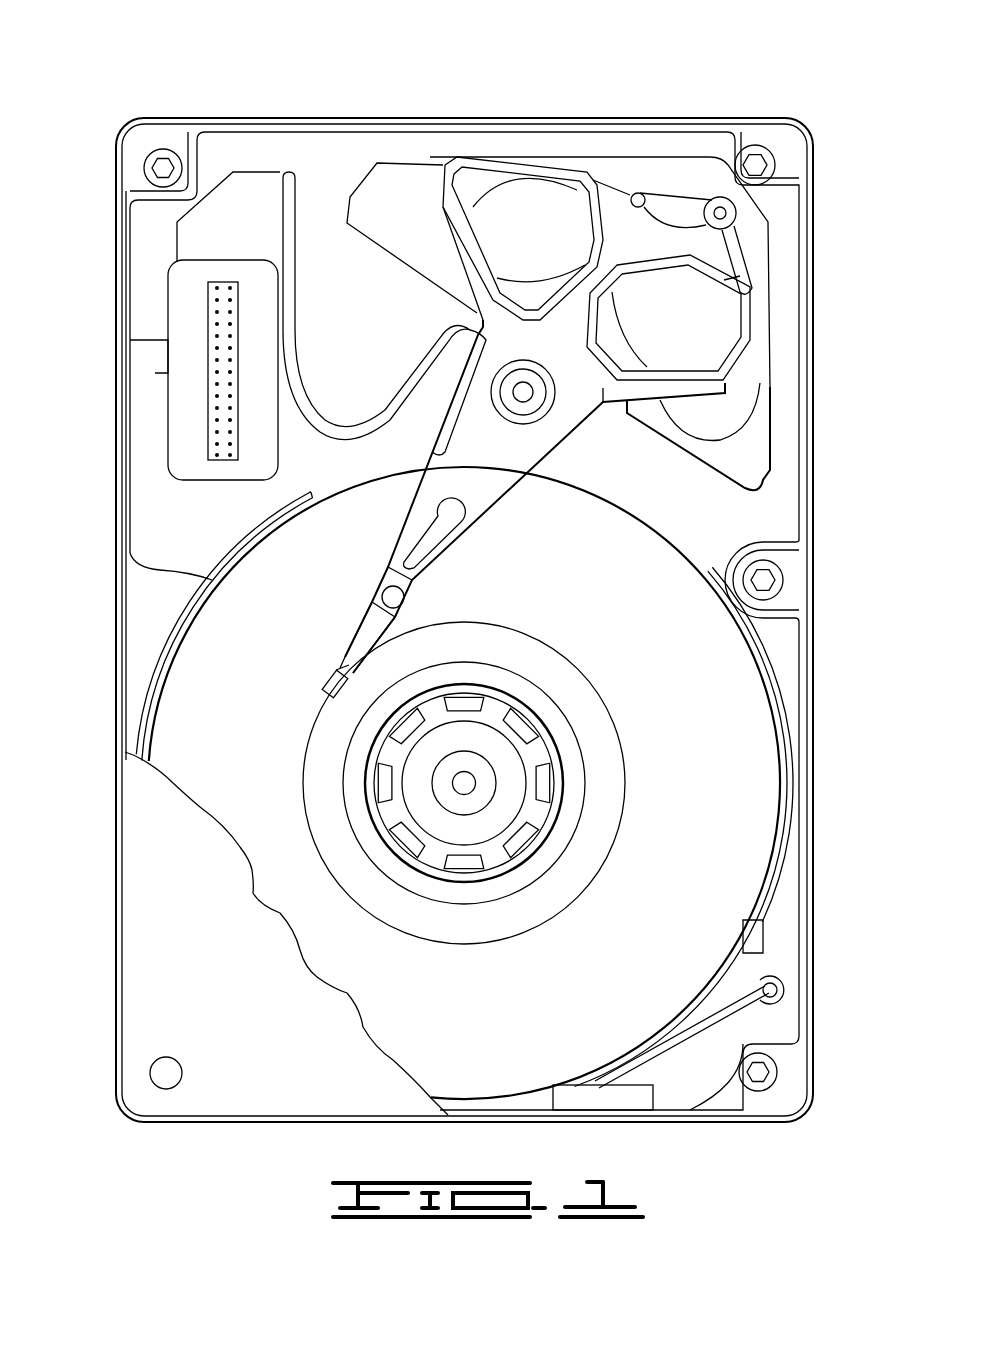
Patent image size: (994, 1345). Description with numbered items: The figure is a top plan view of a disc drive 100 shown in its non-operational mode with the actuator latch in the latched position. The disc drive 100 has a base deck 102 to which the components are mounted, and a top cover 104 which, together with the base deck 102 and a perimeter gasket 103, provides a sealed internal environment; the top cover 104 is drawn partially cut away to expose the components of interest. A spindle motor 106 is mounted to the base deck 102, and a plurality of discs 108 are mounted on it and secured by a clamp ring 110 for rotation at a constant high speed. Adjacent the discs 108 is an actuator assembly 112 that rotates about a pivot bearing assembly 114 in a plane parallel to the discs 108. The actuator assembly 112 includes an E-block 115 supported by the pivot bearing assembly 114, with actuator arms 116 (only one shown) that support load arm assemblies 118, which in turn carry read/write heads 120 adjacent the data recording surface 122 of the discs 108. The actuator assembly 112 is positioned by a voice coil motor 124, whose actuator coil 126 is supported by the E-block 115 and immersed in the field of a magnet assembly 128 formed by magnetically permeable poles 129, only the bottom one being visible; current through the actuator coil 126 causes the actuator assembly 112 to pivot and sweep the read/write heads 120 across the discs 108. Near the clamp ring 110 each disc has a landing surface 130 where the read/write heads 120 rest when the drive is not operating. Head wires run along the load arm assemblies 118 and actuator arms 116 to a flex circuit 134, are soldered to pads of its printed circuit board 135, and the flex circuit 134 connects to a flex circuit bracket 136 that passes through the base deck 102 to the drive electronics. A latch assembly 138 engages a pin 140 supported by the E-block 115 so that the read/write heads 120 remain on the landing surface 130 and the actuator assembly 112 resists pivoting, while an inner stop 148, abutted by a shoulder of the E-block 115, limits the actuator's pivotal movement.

The disc drive 100 is at (232, 95).
The base deck 102 is at (165, 498).
The perimeter gasket 103 is at (810, 403).
The top cover 104 is at (145, 913).
The spindle motor 106 is at (508, 773).
The discs 108 is at (752, 743).
The clamp ring 110 is at (413, 878).
The actuator assembly 112 is at (520, 492).
The pivot bearing assembly 114 is at (520, 388).
The E-block 115 is at (587, 423).
The actuator arms 116 is at (400, 555).
The load arm assemblies 118 is at (355, 650).
The read/write heads 120 is at (328, 692).
The data recording surface 122 is at (708, 868).
The voice coil motor 124 is at (517, 207).
The actuator coil 126 is at (565, 272).
The magnet assembly 128 is at (703, 410).
The magnetically permeable poles 129 is at (365, 190).
The landing surface 130 is at (553, 683).
The flex circuit 134 is at (323, 437).
The printed circuit board 135 is at (440, 422).
The flex circuit bracket 136 is at (185, 328).
The latch assembly 138 is at (665, 134).
The pin 140 is at (727, 247).
The inner stop 148 is at (625, 195).